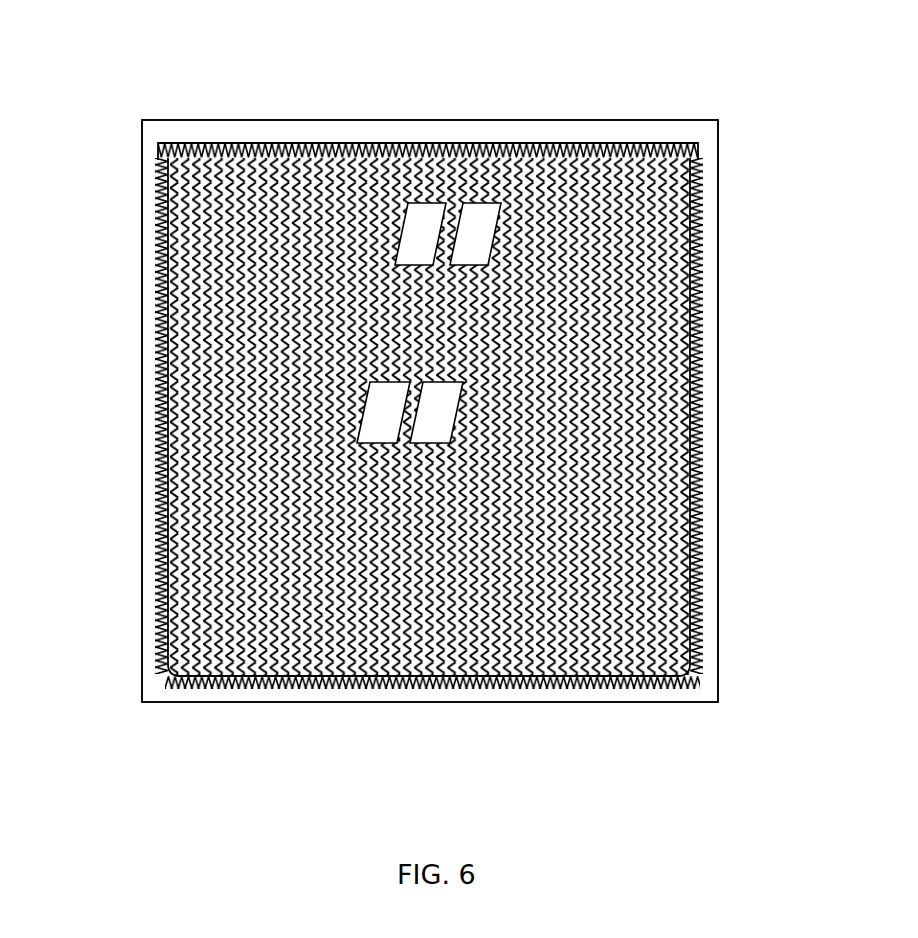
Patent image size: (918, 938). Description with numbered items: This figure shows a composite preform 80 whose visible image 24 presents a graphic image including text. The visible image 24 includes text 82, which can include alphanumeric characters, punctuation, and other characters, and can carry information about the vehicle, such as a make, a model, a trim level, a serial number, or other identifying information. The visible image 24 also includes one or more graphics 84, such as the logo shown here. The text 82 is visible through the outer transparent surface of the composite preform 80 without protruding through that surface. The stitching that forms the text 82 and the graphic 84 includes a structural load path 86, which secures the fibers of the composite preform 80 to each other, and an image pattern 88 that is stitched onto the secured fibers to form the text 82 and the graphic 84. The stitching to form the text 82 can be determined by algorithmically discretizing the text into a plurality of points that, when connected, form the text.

The visible image 24 is at (705, 60).
The composite preform 80 is at (392, 118).
The text 82 is at (662, 331).
The graphic 84 is at (476, 212).
The structural load path 86 is at (690, 250).
The image pattern 88 is at (180, 353).